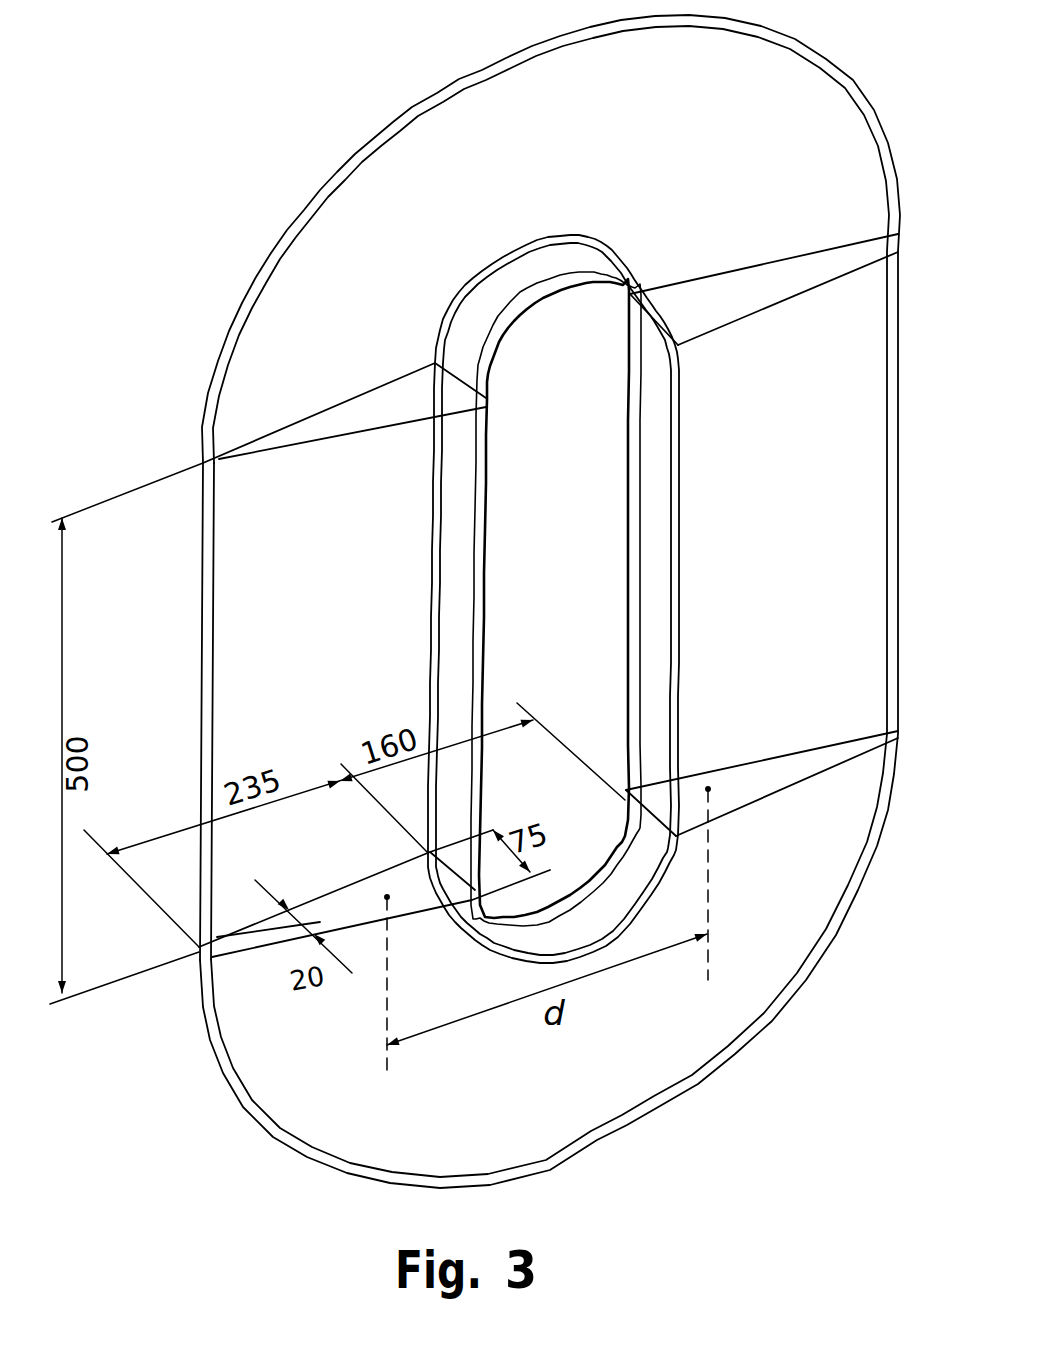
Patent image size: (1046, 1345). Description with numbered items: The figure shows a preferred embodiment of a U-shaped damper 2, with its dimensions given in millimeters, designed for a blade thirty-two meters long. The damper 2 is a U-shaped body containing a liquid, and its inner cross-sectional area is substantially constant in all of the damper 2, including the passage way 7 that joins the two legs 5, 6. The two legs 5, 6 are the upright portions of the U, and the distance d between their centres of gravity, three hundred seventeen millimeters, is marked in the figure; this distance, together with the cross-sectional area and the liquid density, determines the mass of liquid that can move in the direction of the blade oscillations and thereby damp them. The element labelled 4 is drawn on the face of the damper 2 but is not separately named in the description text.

The U-shaped damper 2 is at (509, 597).
The plate face 4 is at (632, 1082).
The leg 5 is at (229, 612).
The leg 6 is at (848, 311).
The passage way 7 is at (411, 162).